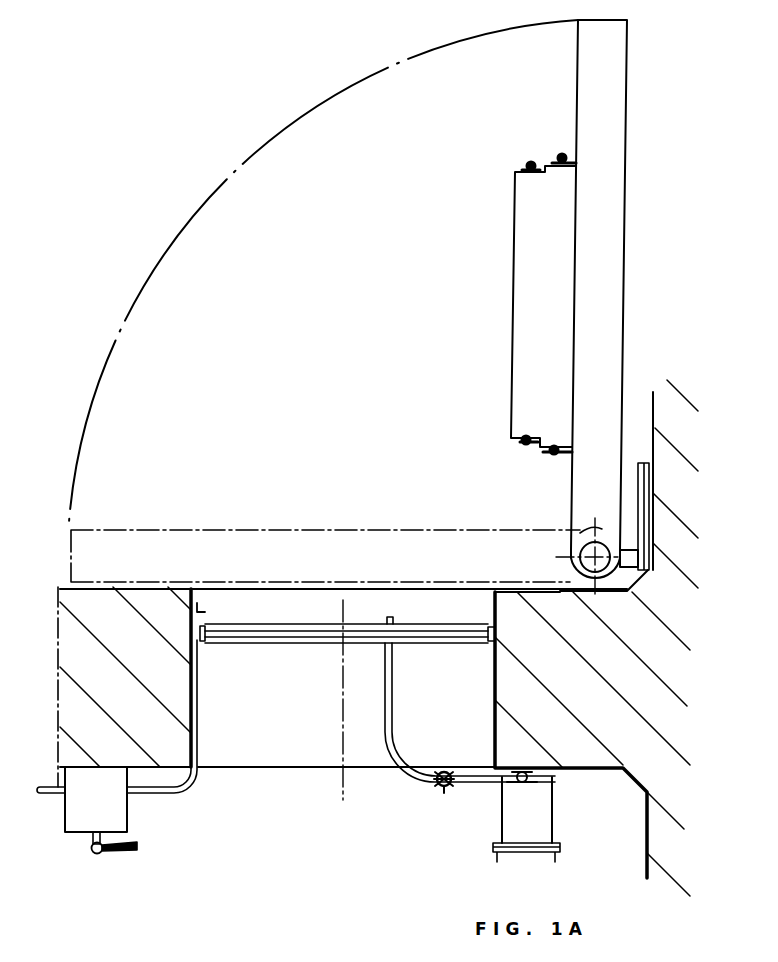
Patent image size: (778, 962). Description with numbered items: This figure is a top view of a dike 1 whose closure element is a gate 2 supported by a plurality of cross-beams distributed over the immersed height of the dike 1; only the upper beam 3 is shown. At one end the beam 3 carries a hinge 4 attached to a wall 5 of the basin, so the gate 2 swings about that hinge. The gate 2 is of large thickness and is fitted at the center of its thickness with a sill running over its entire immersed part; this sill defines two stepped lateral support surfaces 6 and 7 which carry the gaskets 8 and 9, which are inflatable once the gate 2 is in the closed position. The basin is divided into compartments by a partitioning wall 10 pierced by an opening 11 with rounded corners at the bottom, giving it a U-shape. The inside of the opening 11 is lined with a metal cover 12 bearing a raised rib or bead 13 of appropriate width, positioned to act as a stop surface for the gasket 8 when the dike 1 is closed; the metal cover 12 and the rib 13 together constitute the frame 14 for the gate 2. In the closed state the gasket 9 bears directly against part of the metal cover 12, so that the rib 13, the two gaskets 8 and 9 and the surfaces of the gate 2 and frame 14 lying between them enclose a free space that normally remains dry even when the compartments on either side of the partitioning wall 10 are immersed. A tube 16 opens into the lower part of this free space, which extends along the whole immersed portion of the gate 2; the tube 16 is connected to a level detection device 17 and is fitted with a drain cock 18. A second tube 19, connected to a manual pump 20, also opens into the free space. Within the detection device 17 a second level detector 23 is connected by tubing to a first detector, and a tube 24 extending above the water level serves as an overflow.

The dike 1 is at (459, 267).
The gate 2 is at (516, 192).
The upper beam 3 is at (622, 39).
The hinge 4 is at (636, 484).
The wall 5 is at (673, 412).
The lateral support surface 6 is at (524, 170).
The lateral support surface 7 is at (556, 163).
The gasket 8 is at (532, 160).
The gasket 9 is at (565, 154).
The partitioning wall 10 is at (103, 597).
The opening 11 is at (229, 714).
The metal cover 12 is at (197, 603).
The rib 13 is at (290, 633).
The frame 14 is at (210, 618).
The tube 16 is at (412, 778).
The level detection device 17 is at (600, 824).
The drain cock 18 is at (448, 793).
The second tube 19 is at (198, 778).
The manual pump 20 is at (75, 820).
The second level detector 23 is at (548, 839).
The tube 24 is at (553, 782).